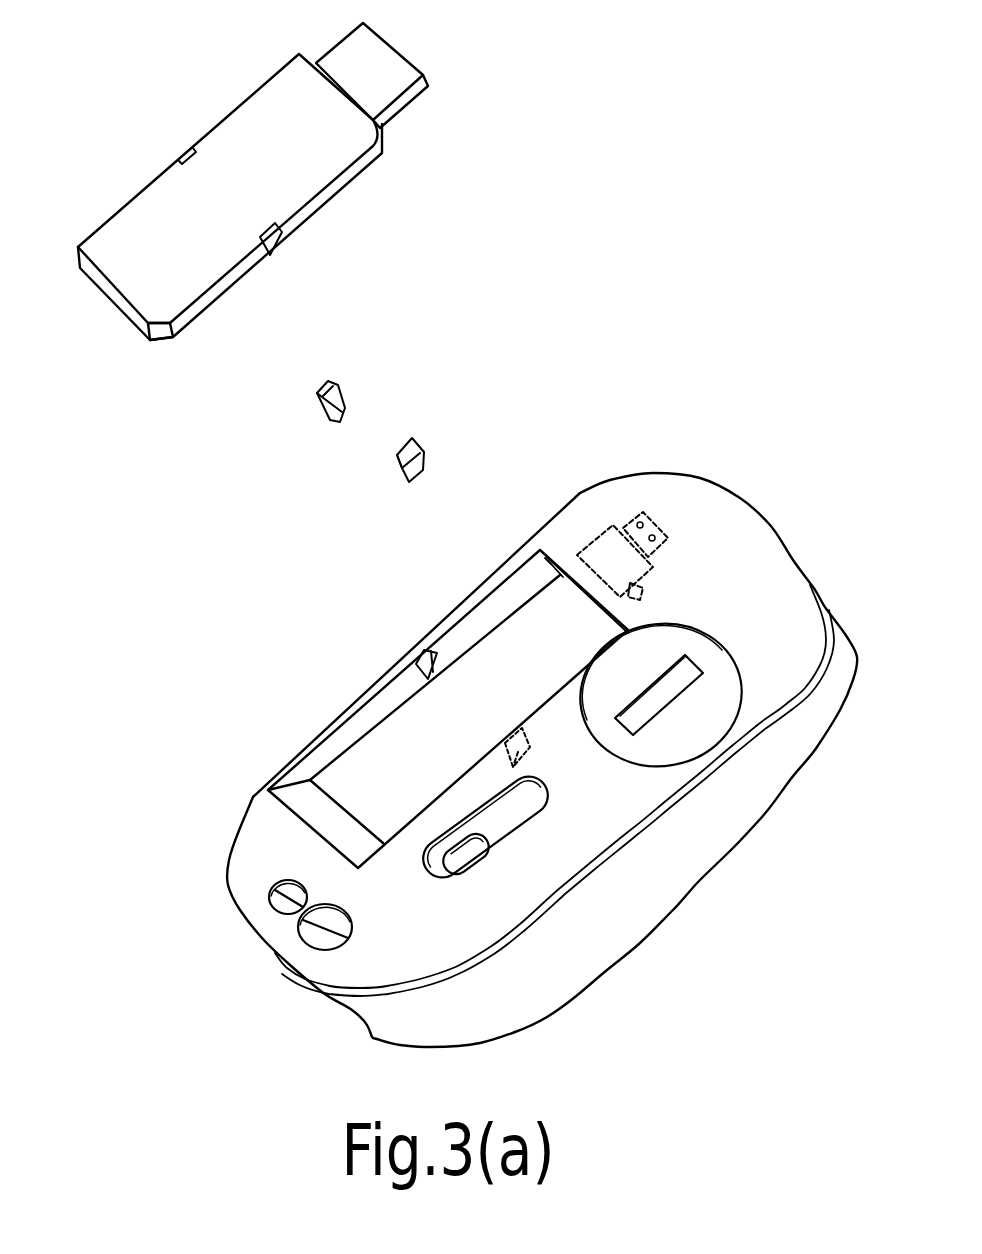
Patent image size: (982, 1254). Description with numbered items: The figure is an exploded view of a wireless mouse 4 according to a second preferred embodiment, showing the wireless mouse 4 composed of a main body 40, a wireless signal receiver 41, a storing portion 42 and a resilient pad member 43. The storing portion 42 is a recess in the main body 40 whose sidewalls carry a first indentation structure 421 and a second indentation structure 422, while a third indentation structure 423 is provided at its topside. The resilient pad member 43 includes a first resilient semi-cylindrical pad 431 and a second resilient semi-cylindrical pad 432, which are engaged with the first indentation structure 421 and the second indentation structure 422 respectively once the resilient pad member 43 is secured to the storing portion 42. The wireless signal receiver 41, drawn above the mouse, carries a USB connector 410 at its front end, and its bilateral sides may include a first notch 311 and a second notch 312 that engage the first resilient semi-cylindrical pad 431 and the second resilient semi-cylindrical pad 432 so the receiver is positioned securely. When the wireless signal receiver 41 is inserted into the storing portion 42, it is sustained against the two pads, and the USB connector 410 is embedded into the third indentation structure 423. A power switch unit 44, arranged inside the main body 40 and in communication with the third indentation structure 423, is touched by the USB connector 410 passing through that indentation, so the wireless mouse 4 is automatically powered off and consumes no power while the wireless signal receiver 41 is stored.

The wireless mouse 4 is at (542, 690).
The main body 40 is at (738, 818).
The wireless signal receiver 41 is at (268, 170).
The USB connector 410 is at (375, 68).
The first notch 311 is at (183, 152).
The second notch 312 is at (283, 240).
The storing portion 42 is at (544, 720).
The first indentation structure 421 is at (423, 657).
The second indentation structure 422 is at (522, 735).
The third indentation structure 423 is at (608, 617).
The resilient pad member 43 is at (342, 444).
The first resilient semi-cylindrical pad 431 is at (320, 408).
The second resilient semi-cylindrical pad 432 is at (397, 463).
The power switch unit 44 is at (605, 552).